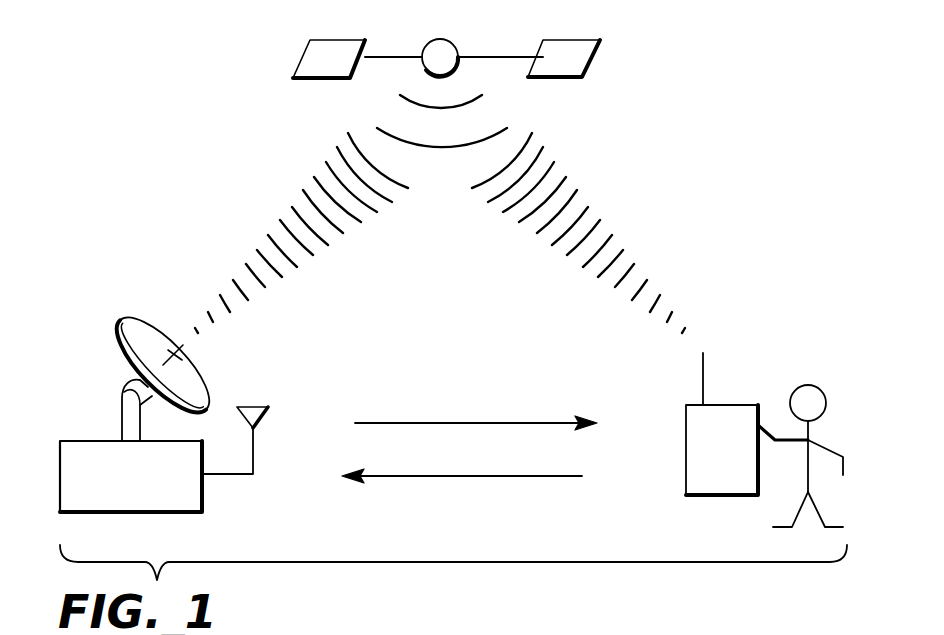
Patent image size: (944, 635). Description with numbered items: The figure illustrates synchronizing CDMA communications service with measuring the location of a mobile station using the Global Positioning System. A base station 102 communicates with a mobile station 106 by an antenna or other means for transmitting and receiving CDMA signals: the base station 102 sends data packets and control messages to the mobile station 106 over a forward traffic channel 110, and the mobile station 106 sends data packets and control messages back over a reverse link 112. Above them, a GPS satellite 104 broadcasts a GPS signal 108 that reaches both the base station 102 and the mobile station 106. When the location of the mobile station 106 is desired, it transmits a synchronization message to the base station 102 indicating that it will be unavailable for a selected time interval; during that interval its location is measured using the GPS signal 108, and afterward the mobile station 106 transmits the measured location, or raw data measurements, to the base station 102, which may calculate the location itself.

The base station 102 is at (203, 498).
The GPS satellite 104 is at (322, 78).
The mobile station 106 is at (721, 405).
The GPS signal 108 is at (493, 130).
The forward traffic channel 110 is at (408, 423).
The reverse link 112 is at (408, 476).